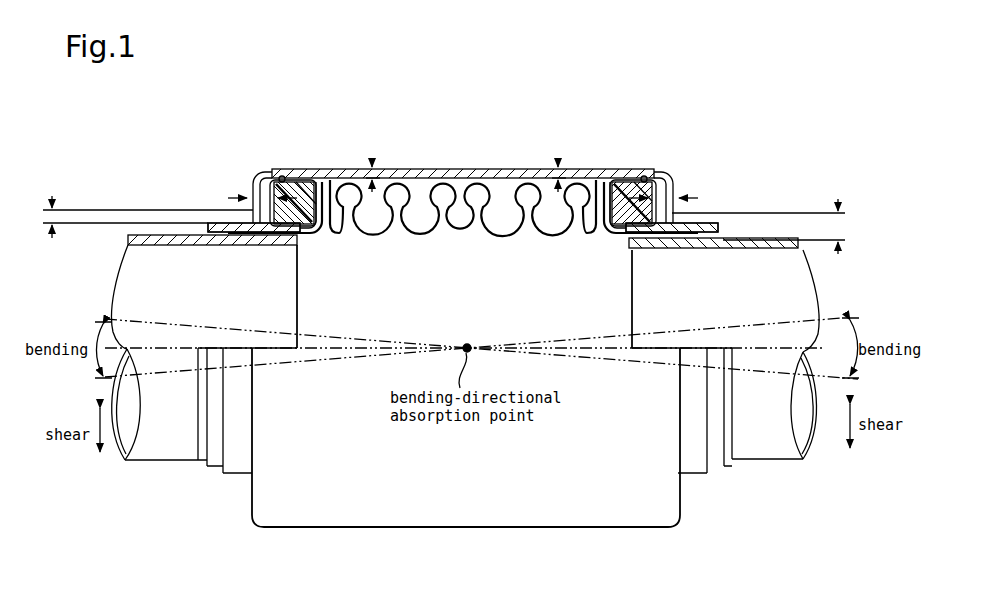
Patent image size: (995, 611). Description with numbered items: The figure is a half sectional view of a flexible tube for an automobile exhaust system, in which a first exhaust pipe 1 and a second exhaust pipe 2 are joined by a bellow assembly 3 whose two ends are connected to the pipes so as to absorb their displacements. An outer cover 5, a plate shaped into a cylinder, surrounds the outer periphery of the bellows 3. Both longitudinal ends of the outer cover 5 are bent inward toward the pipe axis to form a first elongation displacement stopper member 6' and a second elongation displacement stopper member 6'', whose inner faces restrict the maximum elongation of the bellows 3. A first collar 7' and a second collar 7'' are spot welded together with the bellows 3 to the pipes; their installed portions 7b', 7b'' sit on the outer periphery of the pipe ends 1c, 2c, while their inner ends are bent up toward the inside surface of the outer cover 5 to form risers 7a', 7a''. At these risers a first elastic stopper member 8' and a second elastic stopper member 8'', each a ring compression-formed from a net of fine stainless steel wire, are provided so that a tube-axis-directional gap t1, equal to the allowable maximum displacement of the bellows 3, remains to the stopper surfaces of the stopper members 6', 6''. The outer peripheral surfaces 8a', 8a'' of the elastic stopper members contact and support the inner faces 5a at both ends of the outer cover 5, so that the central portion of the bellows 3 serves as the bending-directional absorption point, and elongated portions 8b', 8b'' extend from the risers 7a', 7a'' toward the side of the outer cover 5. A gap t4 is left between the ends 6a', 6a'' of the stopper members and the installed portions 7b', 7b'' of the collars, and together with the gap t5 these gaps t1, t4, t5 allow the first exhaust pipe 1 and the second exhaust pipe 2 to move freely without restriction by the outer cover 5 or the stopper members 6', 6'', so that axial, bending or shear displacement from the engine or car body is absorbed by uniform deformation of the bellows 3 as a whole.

The first exhaust pipe 1 is at (160, 224).
The end of first exhaust pipe 1c is at (305, 292).
The second exhaust pipe 2 is at (762, 234).
The end of second exhaust pipe 2c is at (630, 290).
The bellow assembly 3 is at (448, 236).
The outer cover 5 is at (458, 167).
The inner faces of outer cover 5a is at (275, 176).
The first elongation displacement stopper member 6' is at (260, 188).
The second elongation displacement stopper member 6'' is at (663, 195).
The end of first elongation displacement stopper member 6a' is at (254, 274).
The end of second elongation displacement stopper member 6a'' is at (672, 274).
The first collar 7' is at (212, 257).
The second collar 7'' is at (713, 258).
The riser of first collar 7a' is at (277, 228).
The riser of second collar 7a'' is at (646, 229).
The installed portion of first collar 7b' is at (235, 251).
The installed portion of second collar 7b'' is at (693, 251).
The first elastic stopper member 8' is at (286, 164).
The second elastic stopper member 8'' is at (639, 168).
The outer peripheral surface of first elastic stopper member 8a' is at (301, 173).
The outer peripheral surface of second elastic stopper member 8a'' is at (620, 172).
The elongated portion of first elastic stopper member 8b' is at (328, 171).
The elongated portion of second elastic stopper member 8b'' is at (601, 151).
The tube-axis-directional gap t1 is at (463, 199).
The gap t4 is at (373, 180).
The gap t5 is at (52, 238).